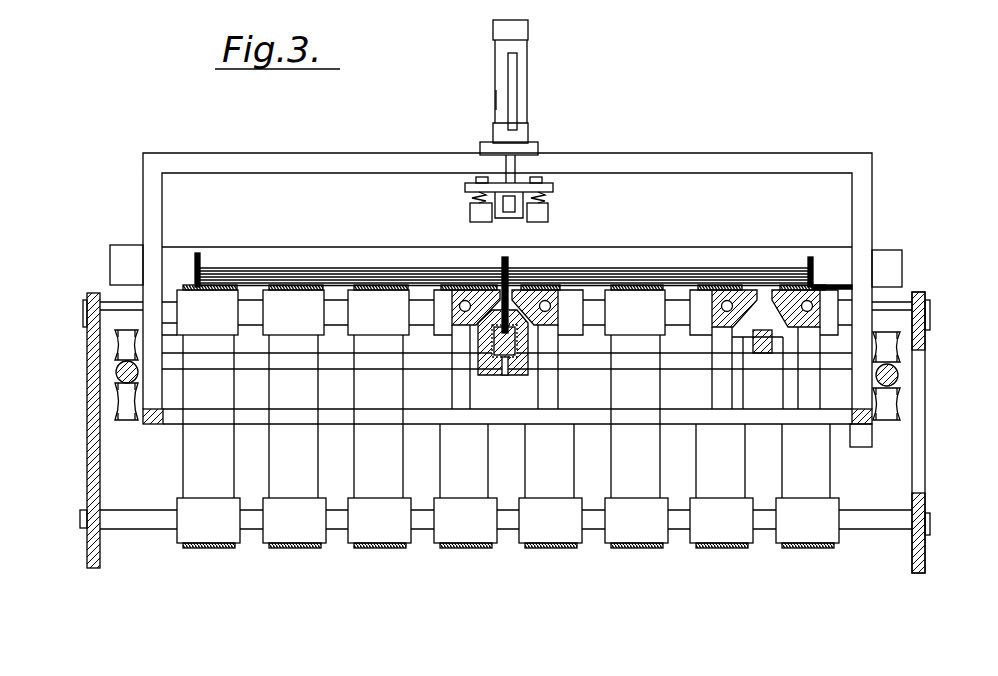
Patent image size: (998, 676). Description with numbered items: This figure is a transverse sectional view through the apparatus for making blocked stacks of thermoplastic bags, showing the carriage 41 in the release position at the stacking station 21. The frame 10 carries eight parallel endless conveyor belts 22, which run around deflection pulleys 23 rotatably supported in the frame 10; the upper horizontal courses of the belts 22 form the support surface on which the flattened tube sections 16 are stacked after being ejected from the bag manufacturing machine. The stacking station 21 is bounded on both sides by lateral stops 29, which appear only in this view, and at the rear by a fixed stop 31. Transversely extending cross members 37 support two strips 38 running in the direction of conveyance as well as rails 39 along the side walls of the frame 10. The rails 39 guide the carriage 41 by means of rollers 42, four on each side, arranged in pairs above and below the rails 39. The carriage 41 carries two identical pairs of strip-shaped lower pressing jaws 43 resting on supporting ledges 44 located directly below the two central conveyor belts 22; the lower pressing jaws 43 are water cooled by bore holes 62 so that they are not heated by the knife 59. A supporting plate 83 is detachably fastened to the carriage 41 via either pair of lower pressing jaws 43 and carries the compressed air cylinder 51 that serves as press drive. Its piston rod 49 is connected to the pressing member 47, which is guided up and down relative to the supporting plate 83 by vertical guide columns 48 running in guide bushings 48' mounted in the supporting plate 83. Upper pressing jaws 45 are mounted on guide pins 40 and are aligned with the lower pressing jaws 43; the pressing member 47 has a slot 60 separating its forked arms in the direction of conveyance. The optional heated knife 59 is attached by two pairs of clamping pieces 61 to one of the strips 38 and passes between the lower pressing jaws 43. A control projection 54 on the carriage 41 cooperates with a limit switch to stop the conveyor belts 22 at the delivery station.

The frame 10 is at (95, 445).
The flattened tube sections 16 is at (258, 272).
The stacking station 21 is at (612, 238).
The conveyor belts 22 is at (290, 288).
The deflection pulleys 23 is at (188, 308).
The lateral stops 29 is at (202, 260).
The fixed stop 31 is at (885, 257).
The cross members 37 is at (278, 358).
The strips 38 is at (512, 358).
The rails 39 is at (117, 375).
The guide pins 40 is at (477, 177).
The carriage 41 is at (873, 212).
The rollers 42 is at (125, 343).
The lower pressing jaws 43 is at (453, 290).
The supporting ledges 44 is at (460, 395).
The upper pressing jaws 45 is at (475, 210).
The pressing member 47 is at (522, 177).
The guide columns 48 is at (549, 76).
The guide bushings 48' is at (481, 91).
The piston rod 49 is at (500, 177).
The compressed air cylinder 51 is at (500, 48).
The control projection 54 is at (872, 440).
The knife 59 is at (506, 257).
The slot 60 is at (508, 213).
The clamping pieces 61 is at (485, 343).
The bore holes 62 is at (463, 303).
The supporting plate 83 is at (513, 147).